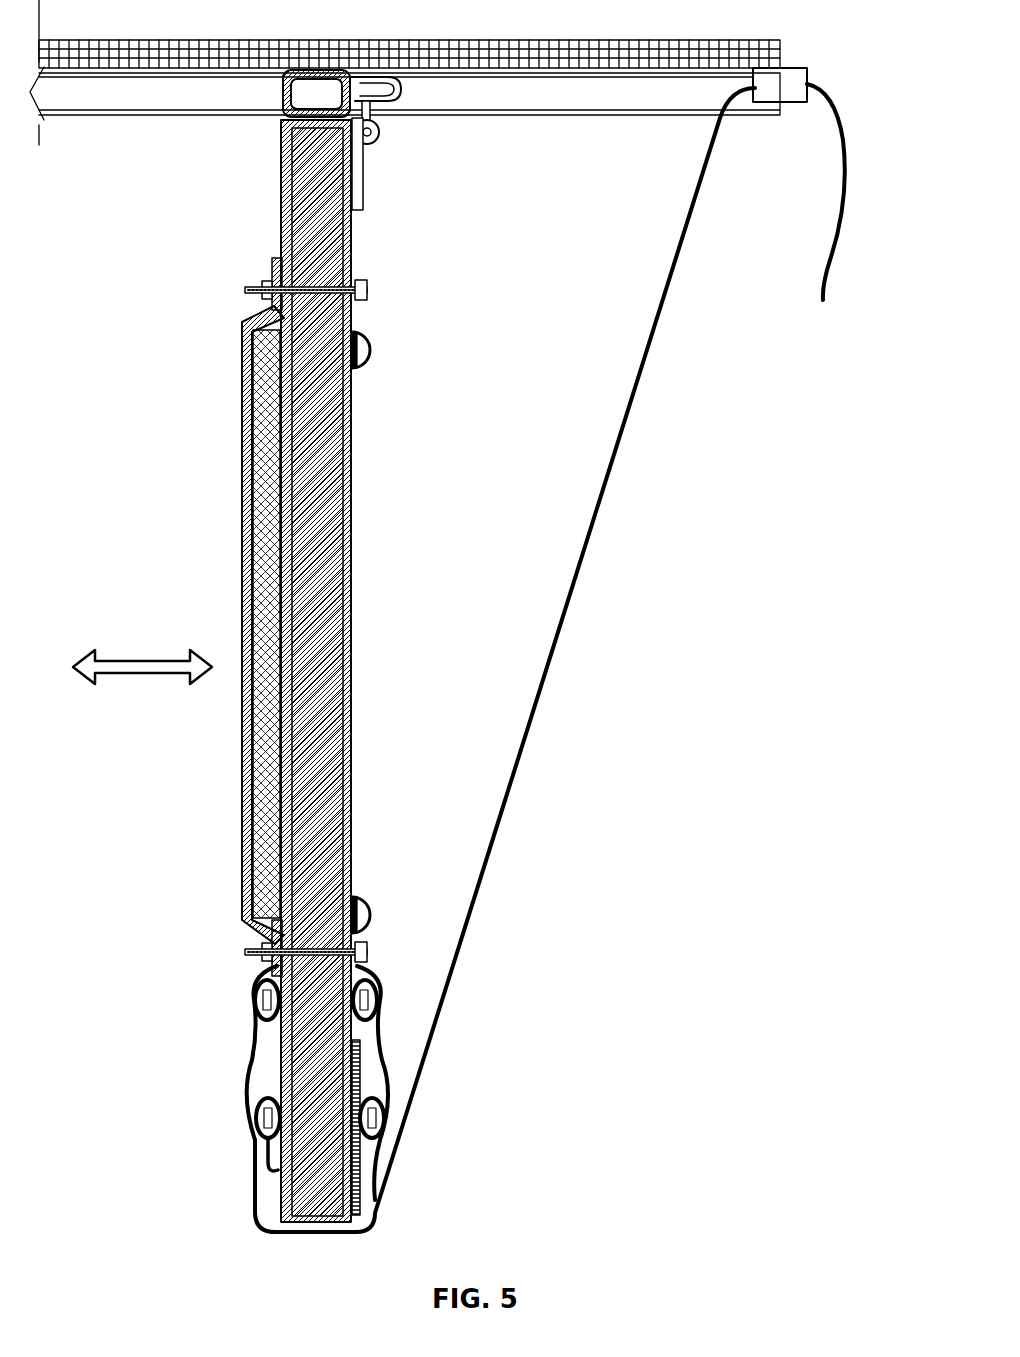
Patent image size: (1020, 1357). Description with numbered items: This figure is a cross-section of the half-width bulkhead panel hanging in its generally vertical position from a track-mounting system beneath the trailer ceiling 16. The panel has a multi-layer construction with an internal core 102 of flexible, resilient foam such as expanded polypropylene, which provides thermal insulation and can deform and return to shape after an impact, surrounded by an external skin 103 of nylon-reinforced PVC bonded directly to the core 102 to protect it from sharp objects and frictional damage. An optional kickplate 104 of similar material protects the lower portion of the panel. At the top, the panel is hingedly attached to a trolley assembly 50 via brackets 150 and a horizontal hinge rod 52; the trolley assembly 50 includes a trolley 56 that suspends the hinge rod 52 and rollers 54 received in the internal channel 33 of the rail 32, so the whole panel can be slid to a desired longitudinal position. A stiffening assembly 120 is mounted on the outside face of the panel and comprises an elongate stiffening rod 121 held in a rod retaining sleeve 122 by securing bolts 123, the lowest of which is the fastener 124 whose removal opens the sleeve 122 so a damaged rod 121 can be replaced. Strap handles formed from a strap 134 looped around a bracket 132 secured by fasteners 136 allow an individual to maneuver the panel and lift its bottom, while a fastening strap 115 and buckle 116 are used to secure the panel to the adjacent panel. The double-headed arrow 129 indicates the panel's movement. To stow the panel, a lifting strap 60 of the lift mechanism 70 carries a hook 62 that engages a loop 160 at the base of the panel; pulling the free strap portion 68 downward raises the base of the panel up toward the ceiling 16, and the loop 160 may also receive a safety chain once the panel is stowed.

The ceiling 16 is at (220, 44).
The rail 32 is at (538, 115).
The internal channel 33 is at (555, 86).
The trolley assembly 50 is at (426, 153).
The hinge rod 52 is at (372, 134).
The roller 54 is at (400, 82).
The trolley 56 is at (383, 102).
The lifting strap 60 is at (645, 358).
The hook 62 is at (268, 1164).
The strap portion 68 is at (822, 272).
The lift mechanism 70 is at (815, 72).
The internal core 102 is at (316, 582).
The external skin 103 is at (283, 98).
The kickplate 104 is at (360, 1188).
The fastening strap 115 is at (360, 368).
The buckle 116 is at (372, 350).
The stiffening assembly 120 is at (180, 313).
The stiffening rod 121 is at (268, 528).
The rod retaining sleeve 122 is at (243, 430).
The securing bolt 123 is at (368, 290).
The fastener 124 is at (265, 284).
The lateral movement direction 129 is at (140, 660).
The bracket 132 is at (383, 1108).
The strap 134 is at (378, 1060).
The fastener 136 is at (258, 1116).
The bracket 150 is at (360, 192).
The loop 160 is at (262, 1142).